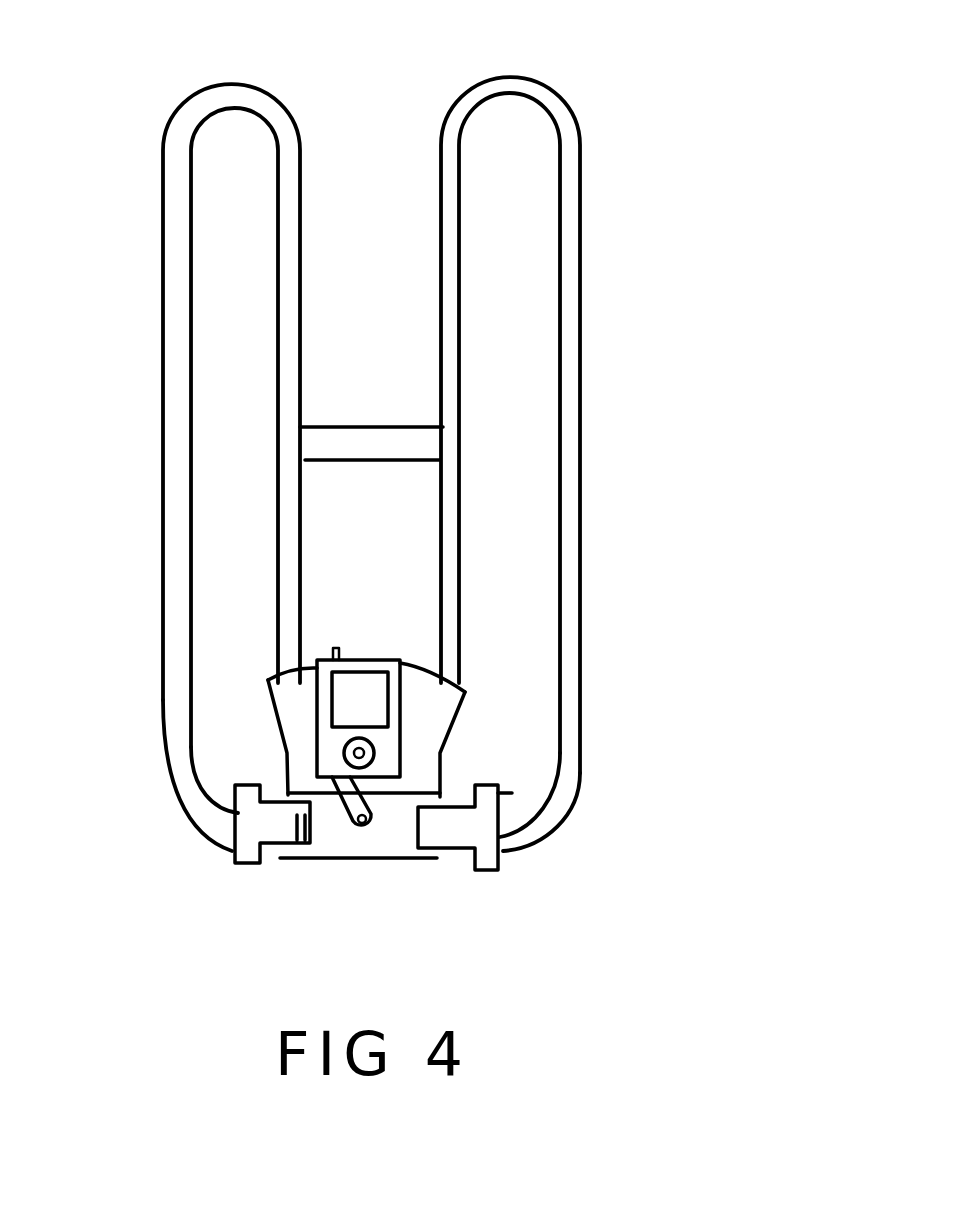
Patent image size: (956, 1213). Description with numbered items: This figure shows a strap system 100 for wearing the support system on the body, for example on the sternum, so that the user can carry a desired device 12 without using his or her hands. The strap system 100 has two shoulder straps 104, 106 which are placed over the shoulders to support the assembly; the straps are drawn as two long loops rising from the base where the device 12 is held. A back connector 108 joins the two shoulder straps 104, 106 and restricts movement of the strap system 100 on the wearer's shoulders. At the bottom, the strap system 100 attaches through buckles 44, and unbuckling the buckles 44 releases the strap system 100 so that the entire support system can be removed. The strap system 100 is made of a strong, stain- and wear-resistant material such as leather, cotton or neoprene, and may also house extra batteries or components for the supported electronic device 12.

The strap system 100 is at (738, 432).
The shoulder strap 104 is at (207, 97).
The shoulder strap 106 is at (550, 83).
The back connector 108 is at (367, 425).
The device 12 is at (325, 668).
The buckle 44 is at (470, 840).